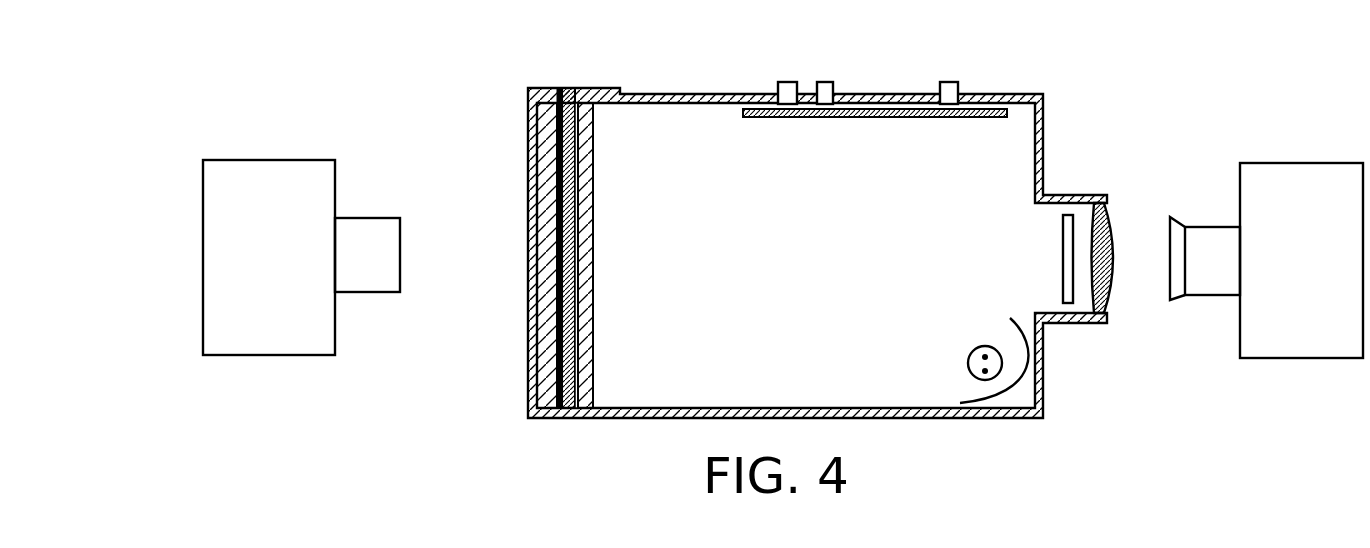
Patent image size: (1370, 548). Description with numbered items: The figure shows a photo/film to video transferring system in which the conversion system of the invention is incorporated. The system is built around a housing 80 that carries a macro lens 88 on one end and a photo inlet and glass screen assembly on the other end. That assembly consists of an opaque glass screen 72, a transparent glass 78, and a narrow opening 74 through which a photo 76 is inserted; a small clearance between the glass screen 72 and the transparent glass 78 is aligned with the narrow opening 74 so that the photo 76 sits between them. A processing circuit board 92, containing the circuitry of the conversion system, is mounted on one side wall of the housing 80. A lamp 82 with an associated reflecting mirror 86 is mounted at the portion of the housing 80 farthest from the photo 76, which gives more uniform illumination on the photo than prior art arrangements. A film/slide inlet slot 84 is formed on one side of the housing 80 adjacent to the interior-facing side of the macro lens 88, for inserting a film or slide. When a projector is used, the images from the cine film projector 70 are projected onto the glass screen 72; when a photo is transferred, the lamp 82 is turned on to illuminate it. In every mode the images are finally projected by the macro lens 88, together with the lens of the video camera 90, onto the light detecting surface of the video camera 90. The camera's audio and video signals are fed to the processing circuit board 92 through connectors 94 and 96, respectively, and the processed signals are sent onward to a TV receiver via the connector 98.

The cine film projector 70 is at (272, 160).
The opaque glass screen 72 is at (545, 255).
The narrow opening 74 is at (558, 88).
The photo 76 is at (566, 88).
The transparent glass 78 is at (583, 272).
The housing 80 is at (1045, 106).
The lamp 82 is at (977, 348).
The film/slide inlet slot 84 is at (1068, 268).
The reflecting mirror 86 is at (1027, 380).
The macro lens 88 is at (1112, 248).
The video camera 90 is at (1285, 163).
The processing circuit board 92 is at (902, 117).
The connector 94 is at (778, 82).
The connector 96 is at (833, 82).
The connector 98 is at (957, 82).